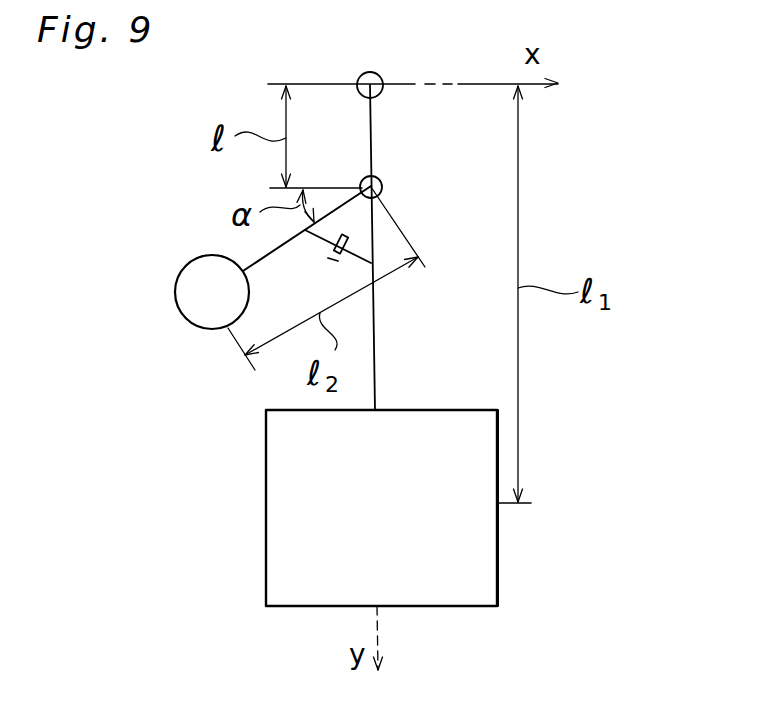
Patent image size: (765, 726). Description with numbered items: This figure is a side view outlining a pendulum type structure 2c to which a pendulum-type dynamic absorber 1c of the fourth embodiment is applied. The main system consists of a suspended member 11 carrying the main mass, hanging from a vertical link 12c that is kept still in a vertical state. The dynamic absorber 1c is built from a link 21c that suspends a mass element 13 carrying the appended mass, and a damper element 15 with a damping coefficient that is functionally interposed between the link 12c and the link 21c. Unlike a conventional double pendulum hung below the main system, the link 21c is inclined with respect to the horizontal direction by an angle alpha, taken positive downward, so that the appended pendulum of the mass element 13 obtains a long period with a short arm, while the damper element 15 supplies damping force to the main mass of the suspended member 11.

The dynamic absorber 1c is at (172, 333).
The pendulum type structure 2c is at (530, 537).
The suspended member 11 is at (266, 558).
The link 12c is at (377, 347).
The mass element 13 is at (203, 329).
The damper element 15 is at (340, 256).
The link 21c is at (263, 256).